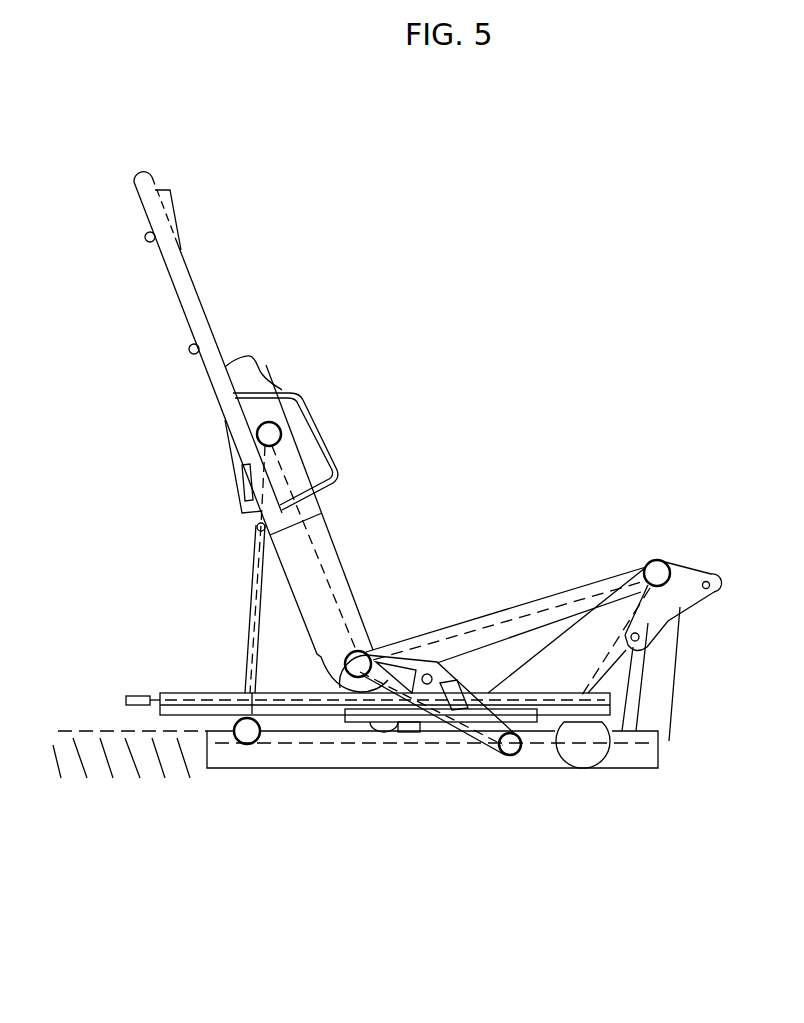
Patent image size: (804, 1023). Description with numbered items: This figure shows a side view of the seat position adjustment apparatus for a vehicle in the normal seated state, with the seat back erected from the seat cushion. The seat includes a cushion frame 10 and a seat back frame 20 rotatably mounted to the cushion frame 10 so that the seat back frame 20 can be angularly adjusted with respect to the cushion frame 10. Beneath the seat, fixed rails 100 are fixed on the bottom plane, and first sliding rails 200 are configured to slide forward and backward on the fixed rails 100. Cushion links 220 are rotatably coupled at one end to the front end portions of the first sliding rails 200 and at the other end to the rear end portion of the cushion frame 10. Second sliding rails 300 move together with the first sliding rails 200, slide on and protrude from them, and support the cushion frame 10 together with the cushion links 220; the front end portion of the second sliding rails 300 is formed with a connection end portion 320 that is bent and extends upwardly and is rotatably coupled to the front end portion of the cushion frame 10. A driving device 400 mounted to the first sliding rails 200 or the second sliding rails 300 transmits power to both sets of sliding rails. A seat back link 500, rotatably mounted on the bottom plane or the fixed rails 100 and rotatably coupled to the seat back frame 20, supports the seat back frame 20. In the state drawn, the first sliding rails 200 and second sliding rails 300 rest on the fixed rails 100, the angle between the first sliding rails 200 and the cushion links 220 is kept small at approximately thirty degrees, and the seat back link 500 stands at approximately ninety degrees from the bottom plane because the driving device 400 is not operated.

The cushion frame 10 is at (513, 617).
The seat back frame 20 is at (330, 572).
The fixed rails 100 is at (140, 733).
The first sliding rails 200 is at (363, 745).
The cushion links 220 is at (440, 740).
The second sliding rails 300 is at (303, 703).
The connection end portion 320 is at (613, 655).
The driving device 400 is at (587, 737).
The seat back link 500 is at (253, 613).